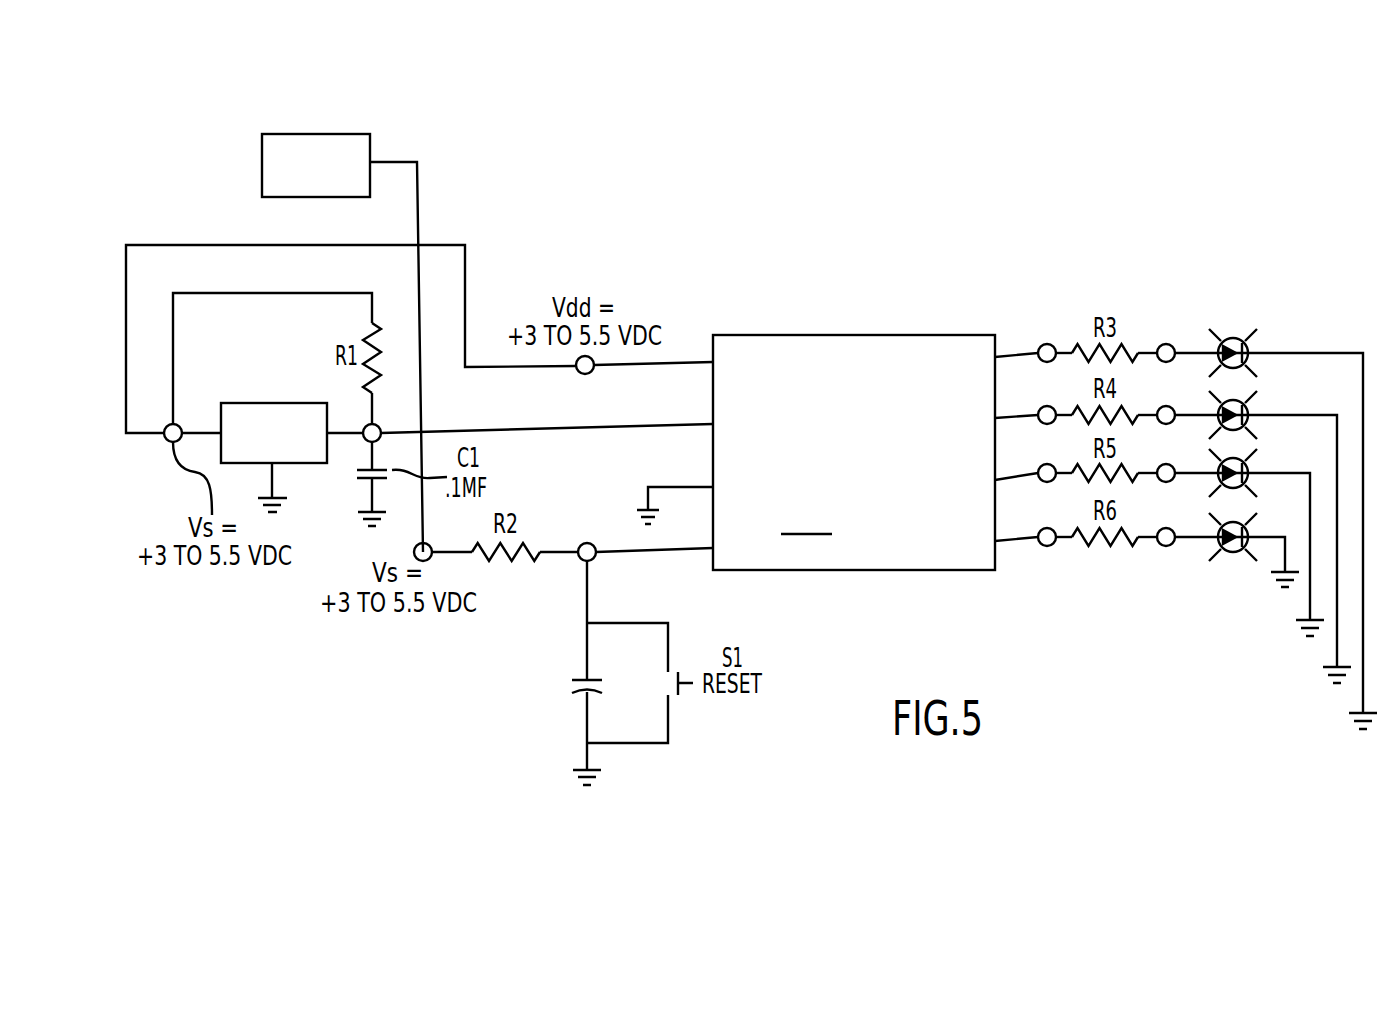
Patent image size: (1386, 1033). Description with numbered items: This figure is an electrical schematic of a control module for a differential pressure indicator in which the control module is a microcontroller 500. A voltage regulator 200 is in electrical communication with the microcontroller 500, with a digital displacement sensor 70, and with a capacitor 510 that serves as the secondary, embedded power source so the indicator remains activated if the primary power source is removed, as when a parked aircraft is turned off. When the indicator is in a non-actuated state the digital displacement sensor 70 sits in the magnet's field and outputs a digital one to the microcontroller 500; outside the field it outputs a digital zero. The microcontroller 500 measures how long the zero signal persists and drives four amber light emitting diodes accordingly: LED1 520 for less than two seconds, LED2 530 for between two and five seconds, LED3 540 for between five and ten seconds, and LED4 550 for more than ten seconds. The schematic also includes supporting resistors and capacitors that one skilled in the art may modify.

The voltage regulator 200 is at (262, 179).
The digital displacement sensor 70 is at (272, 403).
The microcontroller 500 is at (850, 335).
The capacitor 510 is at (573, 681).
The LED1 520 is at (1234, 337).
The LED2 530 is at (1218, 405).
The LED3 540 is at (1215, 480).
The LED4 550 is at (1237, 557).